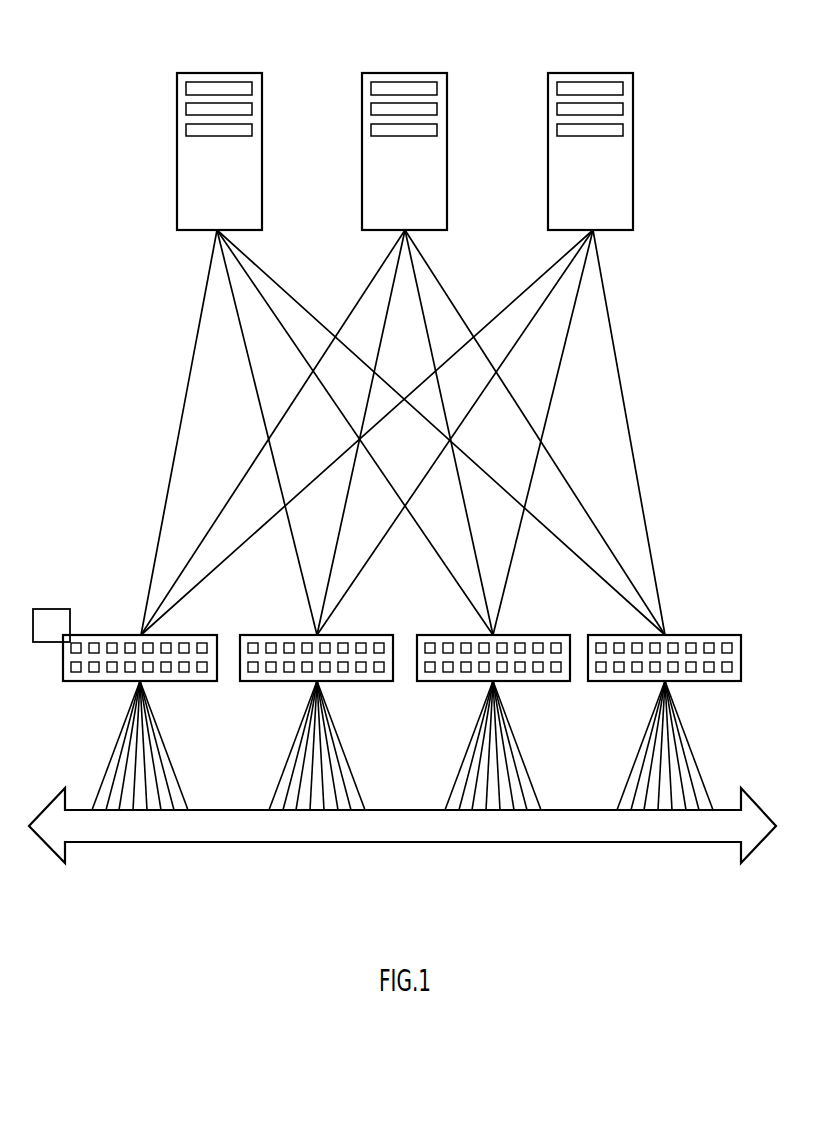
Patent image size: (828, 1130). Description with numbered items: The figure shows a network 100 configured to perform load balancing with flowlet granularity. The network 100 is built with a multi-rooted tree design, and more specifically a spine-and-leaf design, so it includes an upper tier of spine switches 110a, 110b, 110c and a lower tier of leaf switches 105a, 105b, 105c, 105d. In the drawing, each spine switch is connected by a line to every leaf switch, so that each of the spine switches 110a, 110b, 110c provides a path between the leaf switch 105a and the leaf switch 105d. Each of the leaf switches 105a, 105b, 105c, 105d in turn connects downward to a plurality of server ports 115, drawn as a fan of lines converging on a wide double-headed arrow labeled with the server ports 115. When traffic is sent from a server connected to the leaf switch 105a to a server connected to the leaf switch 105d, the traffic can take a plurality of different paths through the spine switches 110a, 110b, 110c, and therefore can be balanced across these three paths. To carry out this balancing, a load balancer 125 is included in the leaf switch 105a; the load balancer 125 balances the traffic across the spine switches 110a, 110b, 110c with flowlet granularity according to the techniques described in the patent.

The network 100 is at (107, 28).
The spine switch 110a is at (177, 152).
The spine switch 110b is at (362, 152).
The spine switch 110c is at (548, 152).
The leaf switch 105a is at (100, 683).
The leaf switch 105b is at (277, 683).
The leaf switch 105c is at (452, 683).
The leaf switch 105d is at (625, 683).
The load balancer 125 is at (64, 635).
The server ports 115 is at (211, 843).